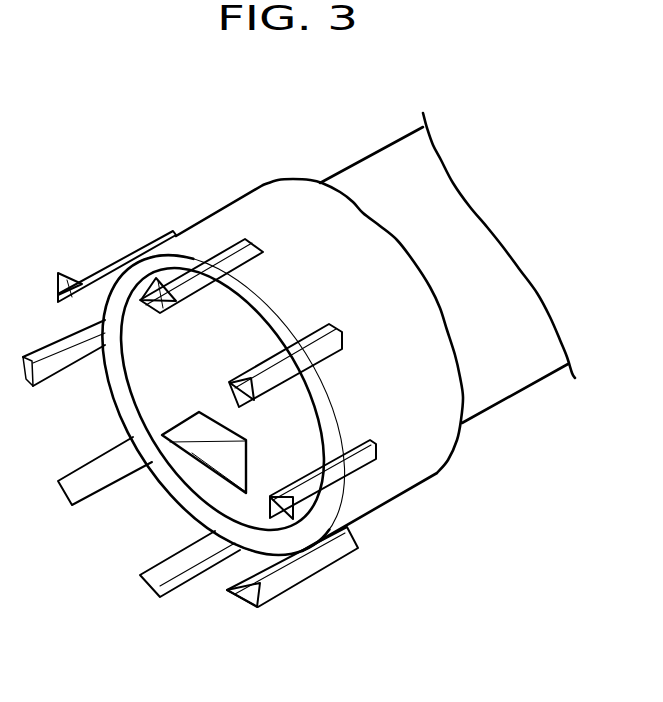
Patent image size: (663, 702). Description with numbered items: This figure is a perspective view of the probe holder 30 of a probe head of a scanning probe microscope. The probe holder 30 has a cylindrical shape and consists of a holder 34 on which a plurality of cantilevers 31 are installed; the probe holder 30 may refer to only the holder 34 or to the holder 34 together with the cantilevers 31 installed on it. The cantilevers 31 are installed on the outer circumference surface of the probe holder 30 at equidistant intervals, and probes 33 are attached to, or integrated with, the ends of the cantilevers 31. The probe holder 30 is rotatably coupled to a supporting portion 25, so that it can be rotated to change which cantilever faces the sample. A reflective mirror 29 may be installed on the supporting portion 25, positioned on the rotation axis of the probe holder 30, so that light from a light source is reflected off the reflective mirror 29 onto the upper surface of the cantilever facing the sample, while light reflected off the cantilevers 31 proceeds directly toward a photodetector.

The probe holder 30 is at (182, 180).
The holder 34 is at (273, 199).
The supporting portion 25 is at (137, 370).
The cantilevers 31 is at (112, 265).
The probes 33 is at (60, 275).
The reflective mirror 29 is at (200, 458).